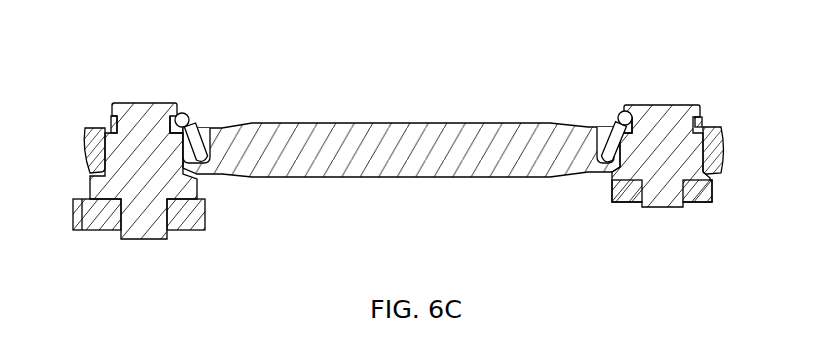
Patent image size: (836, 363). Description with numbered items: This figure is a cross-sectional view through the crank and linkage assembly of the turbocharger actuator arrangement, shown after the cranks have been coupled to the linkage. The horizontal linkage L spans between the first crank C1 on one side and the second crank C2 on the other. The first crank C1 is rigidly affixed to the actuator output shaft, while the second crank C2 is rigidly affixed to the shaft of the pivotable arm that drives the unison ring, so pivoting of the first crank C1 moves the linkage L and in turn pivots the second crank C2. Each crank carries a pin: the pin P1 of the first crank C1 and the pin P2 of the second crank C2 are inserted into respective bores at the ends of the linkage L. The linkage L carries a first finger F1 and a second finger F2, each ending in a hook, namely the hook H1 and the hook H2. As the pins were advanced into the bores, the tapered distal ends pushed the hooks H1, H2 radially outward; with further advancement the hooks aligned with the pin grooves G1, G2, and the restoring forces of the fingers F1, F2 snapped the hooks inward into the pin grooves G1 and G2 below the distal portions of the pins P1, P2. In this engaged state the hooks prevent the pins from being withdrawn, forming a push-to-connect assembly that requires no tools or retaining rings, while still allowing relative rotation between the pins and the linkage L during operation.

The linkage L is at (352, 165).
The pin P1 is at (150, 104).
The pin P2 is at (665, 105).
The hook H1 is at (160, 122).
The hook H2 is at (640, 108).
The first finger F1 is at (190, 119).
The second finger F2 is at (617, 120).
The pin groove G1 is at (112, 116).
The pin groove G2 is at (700, 122).
The first crank C1 is at (90, 221).
The second crank C2 is at (706, 198).